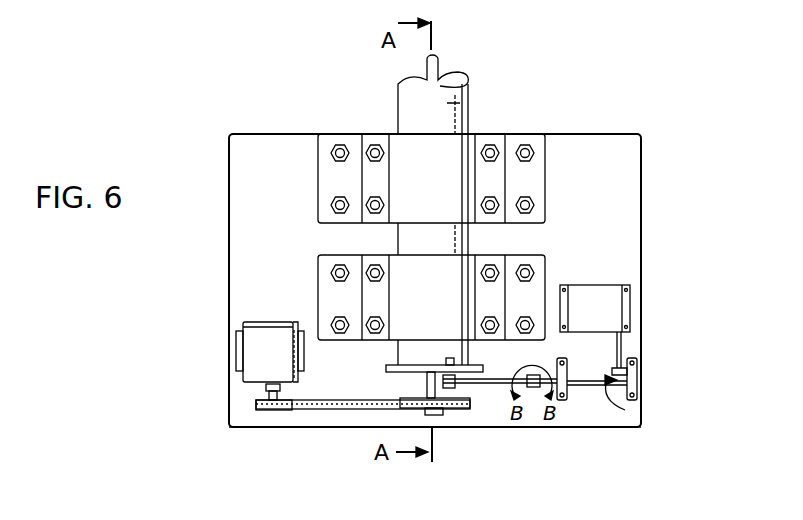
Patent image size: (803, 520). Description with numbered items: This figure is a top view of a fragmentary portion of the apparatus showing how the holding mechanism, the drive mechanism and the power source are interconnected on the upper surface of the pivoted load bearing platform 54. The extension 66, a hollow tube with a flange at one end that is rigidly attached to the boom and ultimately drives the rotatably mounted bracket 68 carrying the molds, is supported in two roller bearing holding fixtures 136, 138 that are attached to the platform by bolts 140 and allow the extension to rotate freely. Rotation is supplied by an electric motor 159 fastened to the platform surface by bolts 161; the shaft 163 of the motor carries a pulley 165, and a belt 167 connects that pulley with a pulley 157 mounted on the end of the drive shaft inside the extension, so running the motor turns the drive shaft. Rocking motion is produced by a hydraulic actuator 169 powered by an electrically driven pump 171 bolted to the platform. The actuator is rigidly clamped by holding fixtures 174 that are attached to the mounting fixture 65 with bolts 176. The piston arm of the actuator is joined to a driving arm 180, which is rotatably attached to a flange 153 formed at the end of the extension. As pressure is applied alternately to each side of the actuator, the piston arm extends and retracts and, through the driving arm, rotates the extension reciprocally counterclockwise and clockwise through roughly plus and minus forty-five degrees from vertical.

The load bearing platform 54 is at (652, 211).
The mounting fixture 65 is at (604, 425).
The extension 66 is at (447, 103).
The rotatably mounted bracket 68 is at (290, 428).
The roller bearing holding fixture 136 is at (431, 178).
The roller bearing holding fixture 138 is at (431, 297).
The bolts 140 is at (530, 153).
The flange 153 is at (387, 367).
The pulley 157 is at (462, 412).
The electric motor 159 is at (262, 321).
The bolts 161 is at (236, 366).
The shaft 163 is at (266, 394).
The pulley 165 is at (256, 406).
The belt 167 is at (341, 410).
The hydraulic actuator 169 is at (625, 410).
The electrically driven pump 171 is at (620, 312).
The holding fixtures 174 is at (640, 384).
The bolts 176 is at (640, 360).
The driving arm 180 is at (497, 385).